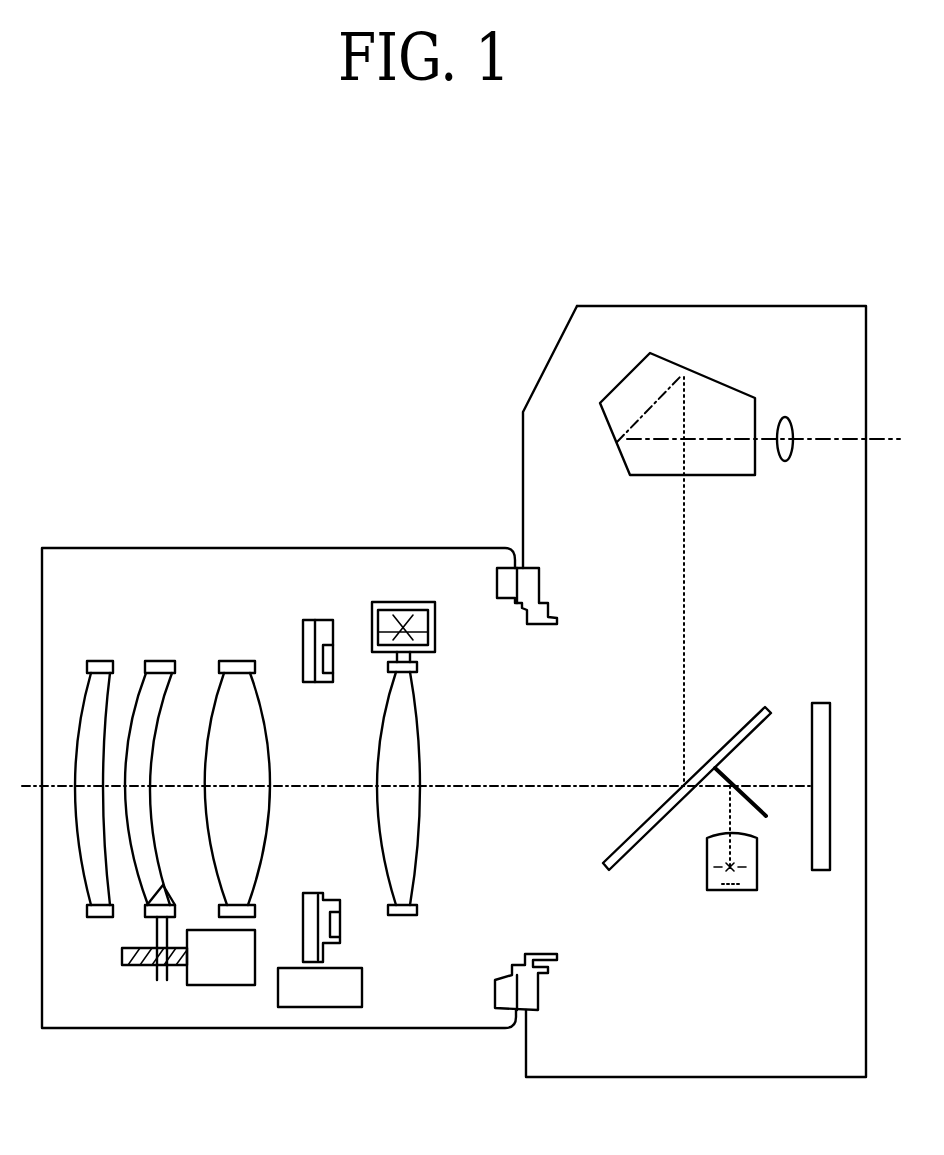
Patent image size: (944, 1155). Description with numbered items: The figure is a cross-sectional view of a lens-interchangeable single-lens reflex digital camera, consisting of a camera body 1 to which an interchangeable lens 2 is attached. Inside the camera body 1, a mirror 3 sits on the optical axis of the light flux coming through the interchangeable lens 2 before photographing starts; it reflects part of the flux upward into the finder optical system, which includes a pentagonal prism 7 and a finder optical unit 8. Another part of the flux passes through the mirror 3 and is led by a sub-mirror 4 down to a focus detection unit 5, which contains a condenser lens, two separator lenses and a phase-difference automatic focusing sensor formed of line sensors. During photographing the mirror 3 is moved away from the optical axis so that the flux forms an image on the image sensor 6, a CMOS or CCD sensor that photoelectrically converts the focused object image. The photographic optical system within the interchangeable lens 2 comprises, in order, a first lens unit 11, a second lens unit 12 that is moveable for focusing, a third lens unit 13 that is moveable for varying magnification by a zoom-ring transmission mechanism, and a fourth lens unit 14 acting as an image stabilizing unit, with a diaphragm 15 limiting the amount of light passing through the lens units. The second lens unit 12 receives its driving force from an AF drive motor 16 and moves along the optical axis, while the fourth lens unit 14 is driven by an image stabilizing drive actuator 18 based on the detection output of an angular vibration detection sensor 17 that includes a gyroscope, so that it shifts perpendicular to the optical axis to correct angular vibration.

The camera body 1 is at (582, 388).
The interchangeable lens 2 is at (63, 563).
The mirror 3 is at (626, 862).
The sub-mirror 4 is at (763, 817).
The focus detection unit 5 is at (738, 890).
The image sensor 6 is at (820, 862).
The pentagonal prism 7 is at (648, 385).
The finder optical unit 8 is at (783, 418).
The first lens unit 11 is at (100, 890).
The second lens unit 12 is at (163, 885).
The third lens unit 13 is at (250, 867).
The fourth lens unit 14 is at (403, 885).
The diaphragm 15 is at (315, 618).
The AF drive motor 16 is at (227, 965).
The angular vibration detection sensor 17 is at (333, 990).
The image stabilizing drive actuator 18 is at (391, 602).